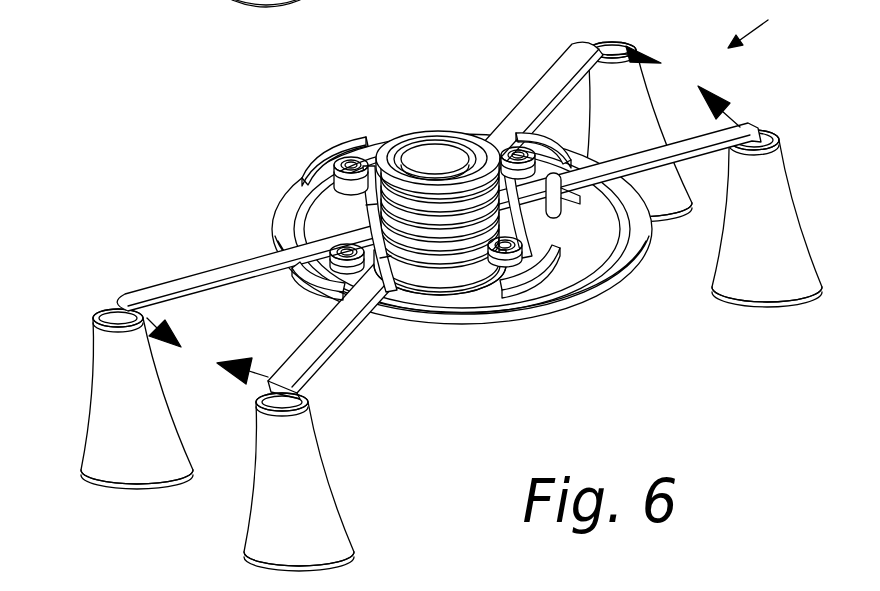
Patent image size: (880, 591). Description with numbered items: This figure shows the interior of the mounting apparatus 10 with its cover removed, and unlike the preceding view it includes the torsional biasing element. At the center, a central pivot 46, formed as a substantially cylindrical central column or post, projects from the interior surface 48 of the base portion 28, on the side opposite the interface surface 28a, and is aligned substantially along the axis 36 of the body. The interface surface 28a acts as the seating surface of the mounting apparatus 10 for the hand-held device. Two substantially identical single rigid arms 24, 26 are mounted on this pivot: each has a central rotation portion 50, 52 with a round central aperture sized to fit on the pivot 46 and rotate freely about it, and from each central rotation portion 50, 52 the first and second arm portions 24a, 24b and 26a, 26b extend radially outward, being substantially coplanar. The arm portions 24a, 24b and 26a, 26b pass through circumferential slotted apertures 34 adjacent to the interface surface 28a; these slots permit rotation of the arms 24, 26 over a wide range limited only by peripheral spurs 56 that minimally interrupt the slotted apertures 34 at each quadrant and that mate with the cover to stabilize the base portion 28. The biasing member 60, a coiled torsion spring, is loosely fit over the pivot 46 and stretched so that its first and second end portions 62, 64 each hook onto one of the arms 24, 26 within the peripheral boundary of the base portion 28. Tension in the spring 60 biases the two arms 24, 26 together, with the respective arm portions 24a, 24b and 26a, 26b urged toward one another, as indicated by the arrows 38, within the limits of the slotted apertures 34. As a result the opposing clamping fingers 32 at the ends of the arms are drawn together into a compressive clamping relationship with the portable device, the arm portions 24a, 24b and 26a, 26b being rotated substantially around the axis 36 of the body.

The mounting apparatus 10 is at (762, 24).
The arm 24 is at (408, 220).
The first arm portion 24a is at (310, 355).
The second arm portion 24b is at (518, 107).
The arm 26 is at (439, 193).
The first arm portion 26a is at (193, 280).
The second arm portion 26b is at (693, 140).
The base portion 28 is at (425, 240).
The interface surface 28a is at (535, 325).
The clamping finger 32 is at (121, 458).
The circumferential slotted aperture 34 is at (378, 147).
The axis 36 is at (430, 167).
The arrows 38 is at (455, 210).
The central pivot 46 is at (431, 166).
The interior surface 48 is at (327, 222).
The central rotation portion 50 is at (442, 314).
The central rotation portion 52 is at (500, 217).
The peripheral spur 56 is at (325, 153).
The biasing member 60 is at (467, 293).
The first end portion 62 is at (394, 284).
The second end portion 64 is at (572, 207).